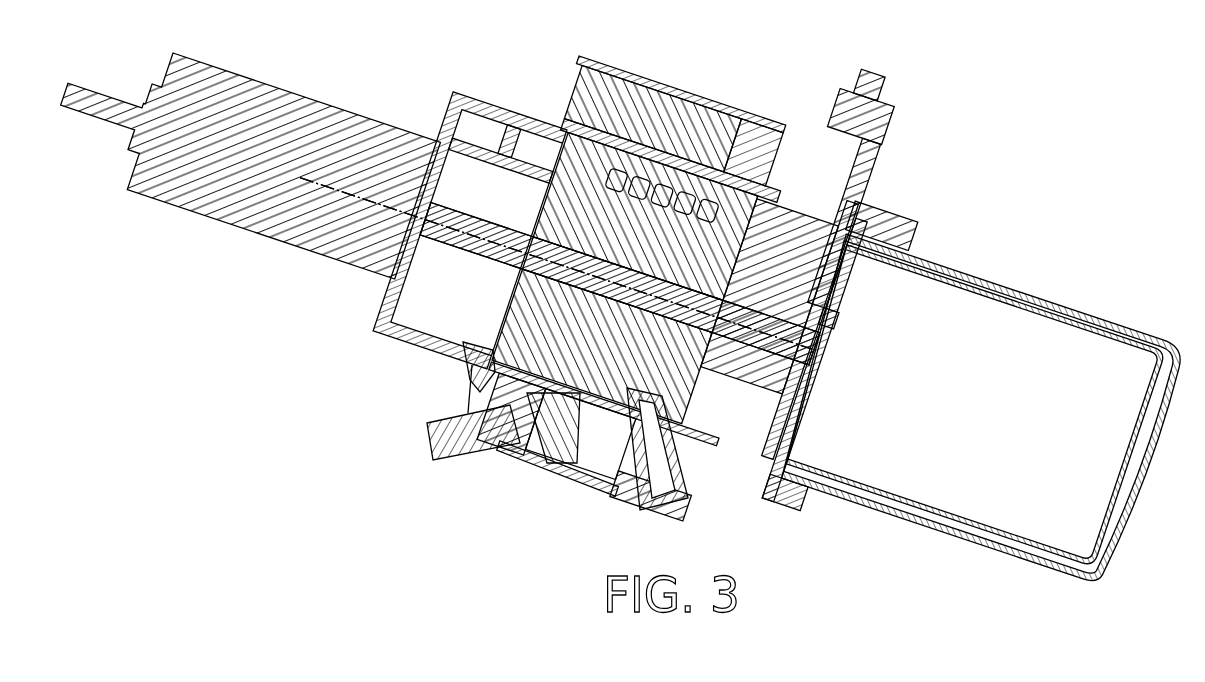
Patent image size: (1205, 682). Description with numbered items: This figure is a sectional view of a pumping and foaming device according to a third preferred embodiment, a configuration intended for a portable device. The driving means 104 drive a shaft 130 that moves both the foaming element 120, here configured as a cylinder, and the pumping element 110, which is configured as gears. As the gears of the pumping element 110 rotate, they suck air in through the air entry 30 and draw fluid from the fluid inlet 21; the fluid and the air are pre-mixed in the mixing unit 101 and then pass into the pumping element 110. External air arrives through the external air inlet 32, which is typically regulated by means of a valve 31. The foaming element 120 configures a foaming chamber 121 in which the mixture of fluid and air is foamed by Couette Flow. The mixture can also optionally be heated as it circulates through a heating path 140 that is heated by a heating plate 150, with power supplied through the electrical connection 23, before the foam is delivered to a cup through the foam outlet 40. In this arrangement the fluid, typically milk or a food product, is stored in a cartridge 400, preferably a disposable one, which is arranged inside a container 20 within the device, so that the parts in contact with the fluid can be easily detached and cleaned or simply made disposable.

The container 20 is at (1013, 288).
The fluid inlet 21 is at (780, 457).
The electrical connection 23 is at (440, 445).
The air entry 30 is at (847, 263).
The valve 31 is at (890, 100).
The external air inlet 32 is at (878, 70).
The foam outlet 40 is at (643, 462).
The mixing unit 101 is at (827, 317).
The driving means 104 is at (203, 112).
The pumping element 110 is at (807, 350).
The foaming element 120 is at (722, 218).
The foaming chamber 121 is at (650, 220).
The shaft 130 is at (343, 190).
The heating path 140 is at (582, 460).
The heating plate 150 is at (530, 447).
The cartridge 400 is at (943, 537).